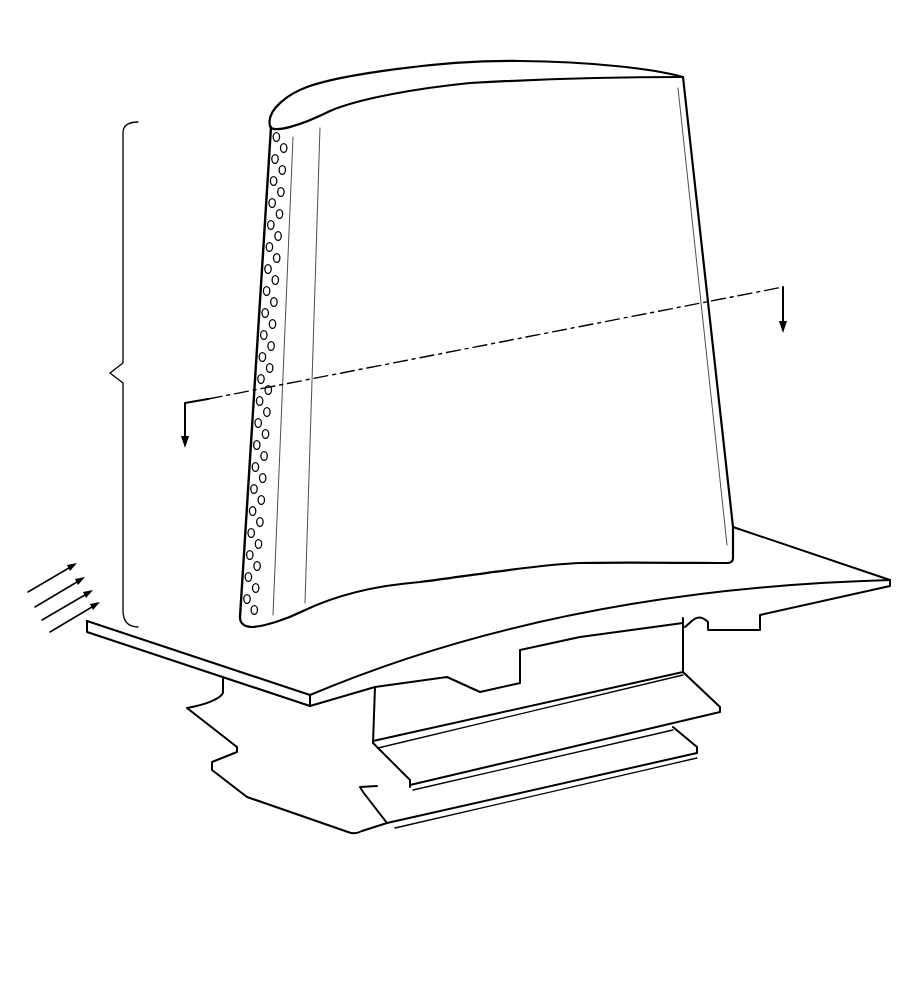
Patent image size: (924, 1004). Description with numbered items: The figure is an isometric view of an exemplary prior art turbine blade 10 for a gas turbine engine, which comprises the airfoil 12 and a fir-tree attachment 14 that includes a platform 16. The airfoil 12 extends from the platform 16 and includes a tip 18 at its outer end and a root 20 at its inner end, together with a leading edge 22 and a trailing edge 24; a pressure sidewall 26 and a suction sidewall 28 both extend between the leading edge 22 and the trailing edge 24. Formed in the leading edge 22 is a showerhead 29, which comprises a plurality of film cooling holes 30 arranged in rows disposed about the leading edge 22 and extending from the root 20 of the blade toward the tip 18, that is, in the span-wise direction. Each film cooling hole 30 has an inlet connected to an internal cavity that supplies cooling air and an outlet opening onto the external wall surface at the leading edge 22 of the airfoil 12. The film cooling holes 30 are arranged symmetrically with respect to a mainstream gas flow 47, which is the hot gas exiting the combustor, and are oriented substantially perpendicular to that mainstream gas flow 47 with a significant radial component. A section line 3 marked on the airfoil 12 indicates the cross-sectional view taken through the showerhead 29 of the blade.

The turbine blade 10 is at (459, 500).
The airfoil 12 is at (486, 321).
The fir-tree attachment 14 is at (716, 697).
The platform 16 is at (852, 563).
The tip 18 is at (324, 92).
The root 20 is at (685, 583).
The leading edge 22 is at (240, 578).
The trailing edge 24 is at (728, 472).
The pressure sidewall 26 is at (608, 210).
The suction sidewall 28 is at (542, 97).
The showerhead 29 is at (105, 374).
The film cooling holes 30 is at (273, 162).
The mainstream gas flow 47 is at (58, 571).
The section line 3- 3 is at (485, 391).